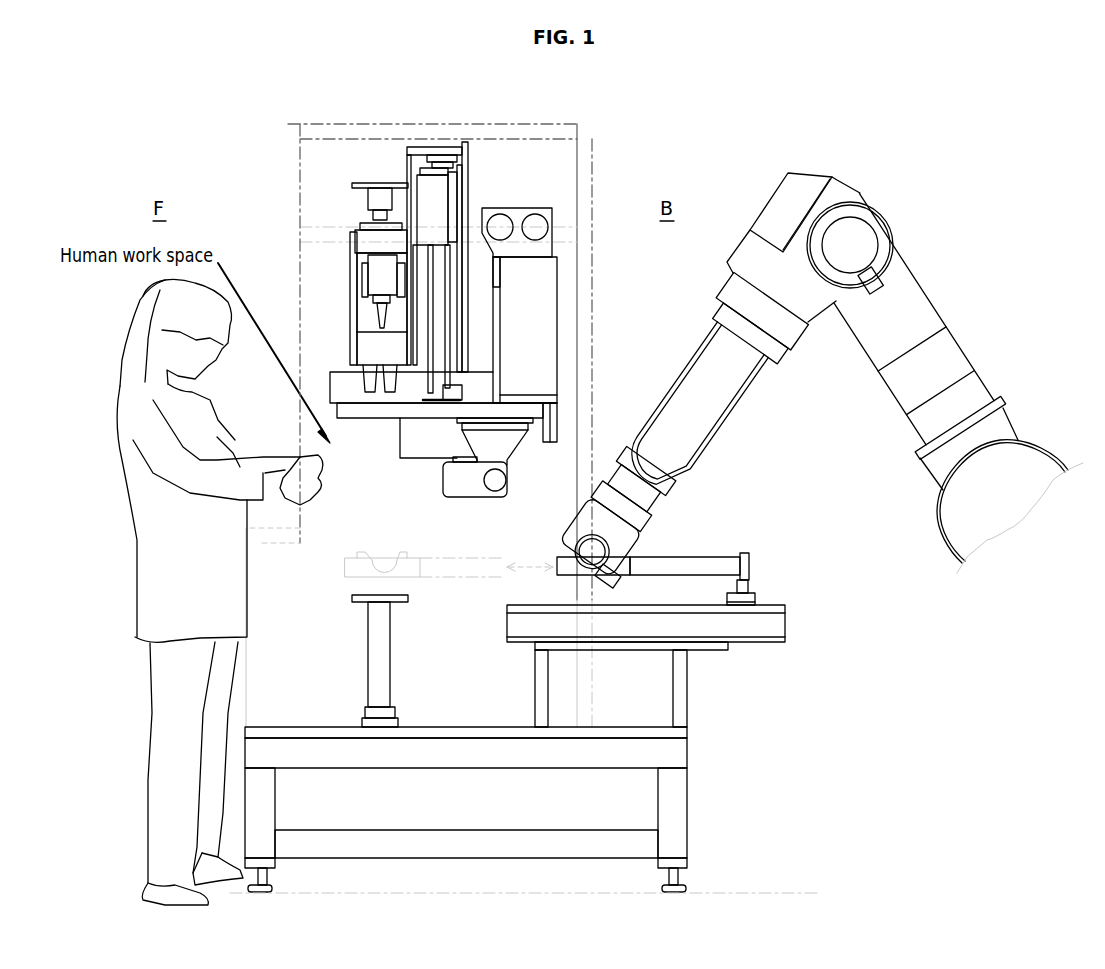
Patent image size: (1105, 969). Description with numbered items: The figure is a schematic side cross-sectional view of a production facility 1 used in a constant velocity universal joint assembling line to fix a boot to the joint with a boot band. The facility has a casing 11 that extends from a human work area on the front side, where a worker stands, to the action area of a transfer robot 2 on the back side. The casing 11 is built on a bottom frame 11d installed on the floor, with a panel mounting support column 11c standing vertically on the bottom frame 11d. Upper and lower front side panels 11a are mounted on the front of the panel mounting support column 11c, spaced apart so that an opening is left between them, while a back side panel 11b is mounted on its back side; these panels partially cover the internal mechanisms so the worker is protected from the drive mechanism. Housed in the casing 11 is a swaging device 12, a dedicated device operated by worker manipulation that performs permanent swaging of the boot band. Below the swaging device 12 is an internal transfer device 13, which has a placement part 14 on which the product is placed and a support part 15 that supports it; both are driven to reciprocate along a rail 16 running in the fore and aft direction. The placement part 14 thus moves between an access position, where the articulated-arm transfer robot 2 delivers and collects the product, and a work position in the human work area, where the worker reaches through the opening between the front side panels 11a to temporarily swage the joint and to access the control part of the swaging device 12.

The production facility 1 is at (250, 108).
The transfer robot 2 is at (930, 298).
The casing 11 is at (598, 160).
The front side panel 11a is at (286, 188).
The back side panel 11b is at (595, 350).
The panel mounting support column 11c is at (286, 548).
The bottom frame 11d is at (677, 808).
The swaging device 12 is at (375, 183).
The internal transfer device 13 is at (706, 542).
The placement part 14 is at (377, 553).
The support part 15 is at (722, 565).
The rail 16 is at (757, 628).